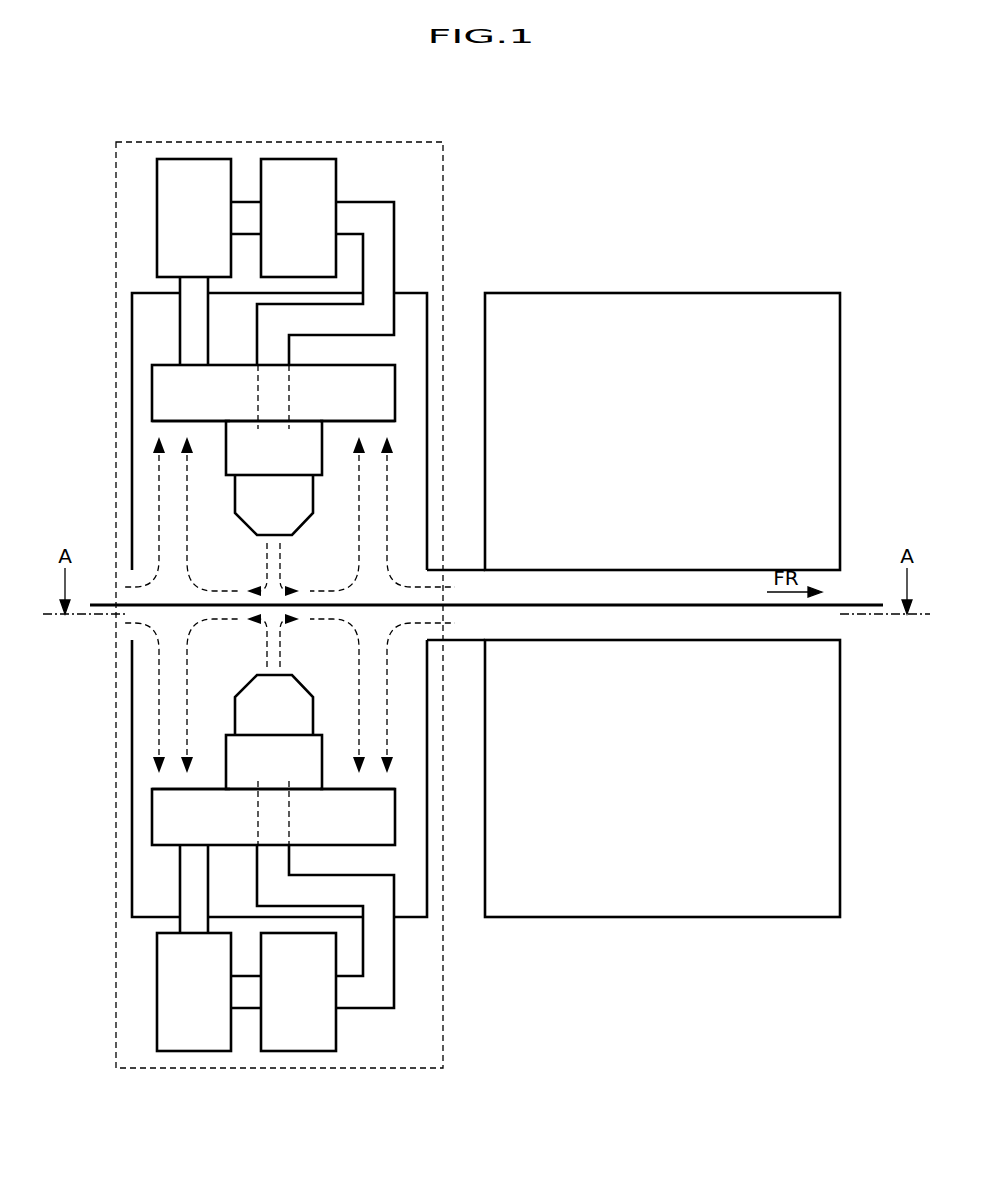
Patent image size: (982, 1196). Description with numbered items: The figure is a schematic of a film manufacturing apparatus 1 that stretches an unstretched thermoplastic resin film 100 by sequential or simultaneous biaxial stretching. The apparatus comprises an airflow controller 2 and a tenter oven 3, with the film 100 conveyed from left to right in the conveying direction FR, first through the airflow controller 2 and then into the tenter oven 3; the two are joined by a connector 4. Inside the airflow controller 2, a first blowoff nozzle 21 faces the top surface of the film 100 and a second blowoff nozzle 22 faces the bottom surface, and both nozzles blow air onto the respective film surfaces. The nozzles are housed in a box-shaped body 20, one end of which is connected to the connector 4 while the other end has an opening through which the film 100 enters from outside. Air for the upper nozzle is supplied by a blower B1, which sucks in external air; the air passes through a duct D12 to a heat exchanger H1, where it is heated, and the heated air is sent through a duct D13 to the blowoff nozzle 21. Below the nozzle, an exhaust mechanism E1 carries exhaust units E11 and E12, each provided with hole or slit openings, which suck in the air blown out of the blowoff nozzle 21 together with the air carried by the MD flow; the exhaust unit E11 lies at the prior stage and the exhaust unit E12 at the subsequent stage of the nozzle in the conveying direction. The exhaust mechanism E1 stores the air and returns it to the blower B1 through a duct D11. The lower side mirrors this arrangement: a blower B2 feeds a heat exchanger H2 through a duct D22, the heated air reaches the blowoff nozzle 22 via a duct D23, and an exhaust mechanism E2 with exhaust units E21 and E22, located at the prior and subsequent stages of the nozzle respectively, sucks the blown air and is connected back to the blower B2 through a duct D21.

The film manufacturing apparatus 1 is at (581, 154).
The airflow controller 2 is at (116, 176).
The tenter oven 3 is at (659, 293).
The connector 4 is at (460, 570).
The box-shaped body 20 is at (132, 304).
The first blowoff nozzle 21 is at (214, 495).
The second blowoff nozzle 22 is at (214, 714).
The film 100 is at (661, 605).
The blower B1 is at (191, 159).
The blower B2 is at (191, 1051).
The heat exchanger H1 is at (296, 159).
The heat exchanger H2 is at (296, 1051).
The duct D11 is at (180, 320).
The duct D12 is at (245, 202).
The duct D13 is at (364, 202).
The duct D21 is at (180, 889).
The duct D22 is at (245, 1008).
The duct D23 is at (364, 1008).
The exhaust mechanism E1 is at (152, 393).
The exhaust unit E11 is at (172, 421).
The exhaust unit E12 is at (373, 421).
The exhaust mechanism E2 is at (152, 816).
The exhaust unit E21 is at (172, 789).
The exhaust unit E22 is at (373, 789).